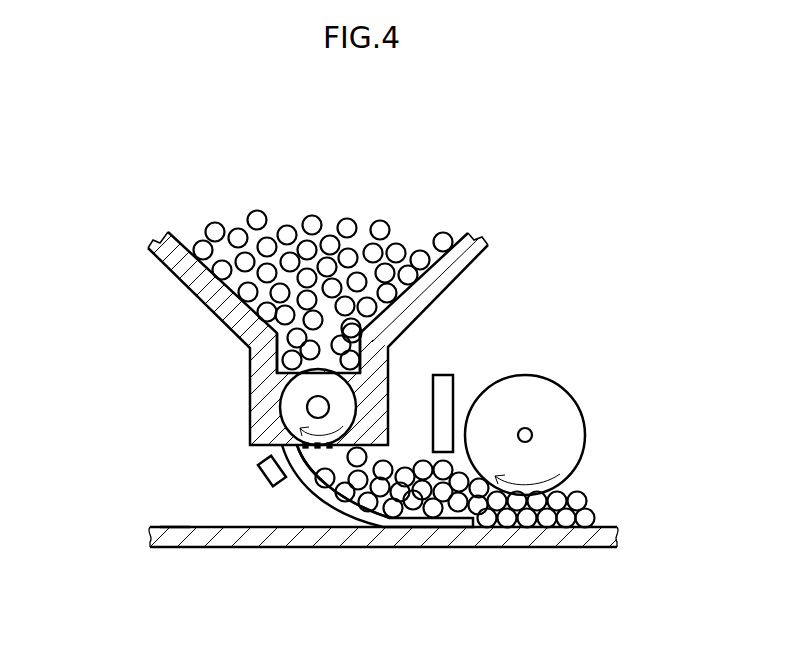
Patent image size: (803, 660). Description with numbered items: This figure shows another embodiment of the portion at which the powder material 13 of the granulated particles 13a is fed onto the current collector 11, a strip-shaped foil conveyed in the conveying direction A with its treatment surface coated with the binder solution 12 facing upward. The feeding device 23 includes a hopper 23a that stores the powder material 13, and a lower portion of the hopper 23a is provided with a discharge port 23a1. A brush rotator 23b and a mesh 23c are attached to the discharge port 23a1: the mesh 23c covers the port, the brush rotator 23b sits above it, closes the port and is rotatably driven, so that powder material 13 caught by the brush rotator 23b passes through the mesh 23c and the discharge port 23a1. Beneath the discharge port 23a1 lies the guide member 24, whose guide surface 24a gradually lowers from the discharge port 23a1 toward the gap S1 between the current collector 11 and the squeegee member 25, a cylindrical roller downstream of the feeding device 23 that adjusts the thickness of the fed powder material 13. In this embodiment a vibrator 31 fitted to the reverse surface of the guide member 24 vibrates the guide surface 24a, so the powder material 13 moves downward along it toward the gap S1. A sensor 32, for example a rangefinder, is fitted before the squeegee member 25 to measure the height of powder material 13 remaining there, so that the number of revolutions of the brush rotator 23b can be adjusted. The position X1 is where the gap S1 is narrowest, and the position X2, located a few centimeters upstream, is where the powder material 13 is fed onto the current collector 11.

The current collector 11 is at (203, 548).
The binder solution 12 is at (173, 524).
The powder material 13 is at (401, 455).
The granulated particles 13a is at (420, 250).
The feeding device 23 is at (320, 320).
The hopper 23a is at (190, 290).
The discharge port 23a1 is at (323, 346).
The brush rotator 23b is at (281, 408).
The mesh 23c is at (303, 446).
The guide member 24 is at (372, 524).
The guide surface 24a is at (310, 466).
The squeegee member 25 is at (556, 380).
The vibrator 31 is at (267, 470).
The sensor 32 is at (445, 375).
The gap S1 is at (569, 491).
The conveying direction A is at (315, 573).
The position X1 is at (529, 565).
The position X2 is at (477, 565).